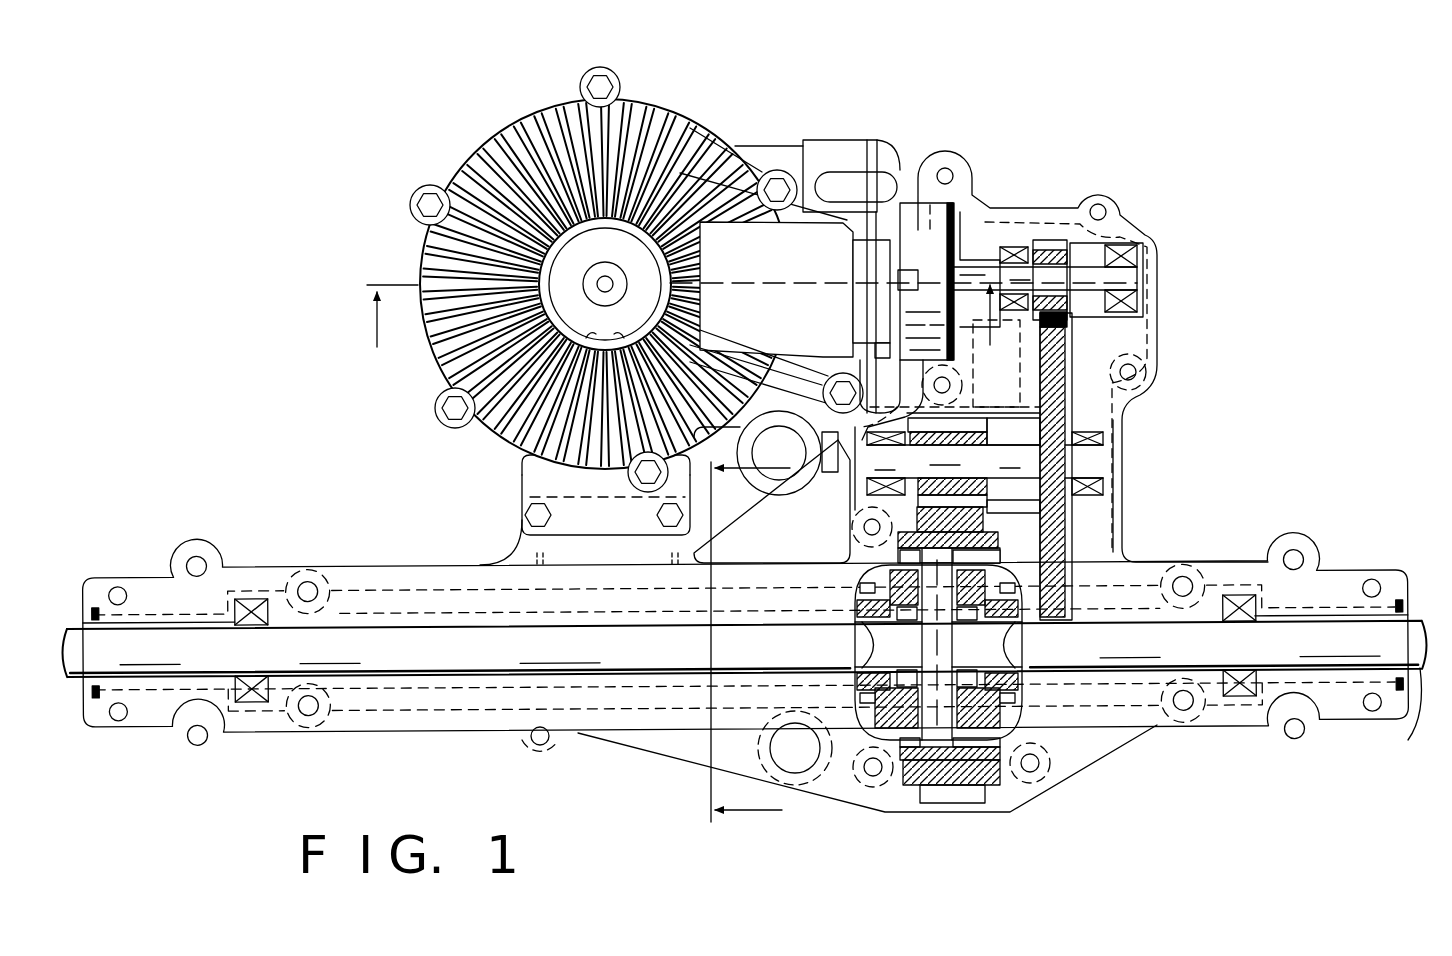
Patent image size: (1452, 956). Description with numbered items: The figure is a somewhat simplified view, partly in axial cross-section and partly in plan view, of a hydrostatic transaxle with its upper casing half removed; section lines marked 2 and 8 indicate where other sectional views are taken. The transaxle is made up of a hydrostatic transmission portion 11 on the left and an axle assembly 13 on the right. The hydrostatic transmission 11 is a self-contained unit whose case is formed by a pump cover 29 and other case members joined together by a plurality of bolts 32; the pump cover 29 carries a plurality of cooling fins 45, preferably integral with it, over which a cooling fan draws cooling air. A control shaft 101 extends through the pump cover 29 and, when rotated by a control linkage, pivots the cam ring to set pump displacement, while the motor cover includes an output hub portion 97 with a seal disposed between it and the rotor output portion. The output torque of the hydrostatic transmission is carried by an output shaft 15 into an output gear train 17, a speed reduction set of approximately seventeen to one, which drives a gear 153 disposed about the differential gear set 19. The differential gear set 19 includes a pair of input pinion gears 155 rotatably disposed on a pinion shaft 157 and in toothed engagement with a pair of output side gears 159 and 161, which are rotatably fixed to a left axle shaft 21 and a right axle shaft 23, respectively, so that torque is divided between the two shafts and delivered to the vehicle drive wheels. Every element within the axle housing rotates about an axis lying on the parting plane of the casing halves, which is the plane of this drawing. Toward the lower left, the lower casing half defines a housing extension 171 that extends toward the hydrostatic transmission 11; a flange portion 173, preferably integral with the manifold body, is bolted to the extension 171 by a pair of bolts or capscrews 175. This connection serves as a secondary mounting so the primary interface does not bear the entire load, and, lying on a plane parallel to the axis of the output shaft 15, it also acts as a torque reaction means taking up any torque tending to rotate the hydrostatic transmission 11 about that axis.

The hydrostatic transmission portion 11 is at (478, 114).
The axle assembly 13 is at (1190, 425).
The output shaft 15 is at (1137, 282).
The output gear train 17 is at (1014, 398).
The differential gear set 19 is at (1058, 732).
The left axle shaft 21 is at (85, 632).
The right axle shaft 23 is at (1408, 717).
The pump cover 29 is at (605, 270).
The bolts 32 is at (425, 188).
The cooling fins 45 is at (668, 120).
The output hub portion 97 is at (918, 230).
The control shaft 101 is at (866, 290).
The gear 153 is at (975, 786).
The input pinion gears 155 is at (862, 556).
The pinion shaft 157 is at (937, 748).
The output side gear 159 is at (856, 640).
The output side gear 161 is at (1010, 640).
The housing extension 171 is at (520, 520).
The flange portion 173 is at (535, 468).
The bolts or capscrews 175 is at (655, 525).
The section line 2- 2 is at (682, 331).
The section line 8- 8 is at (750, 643).